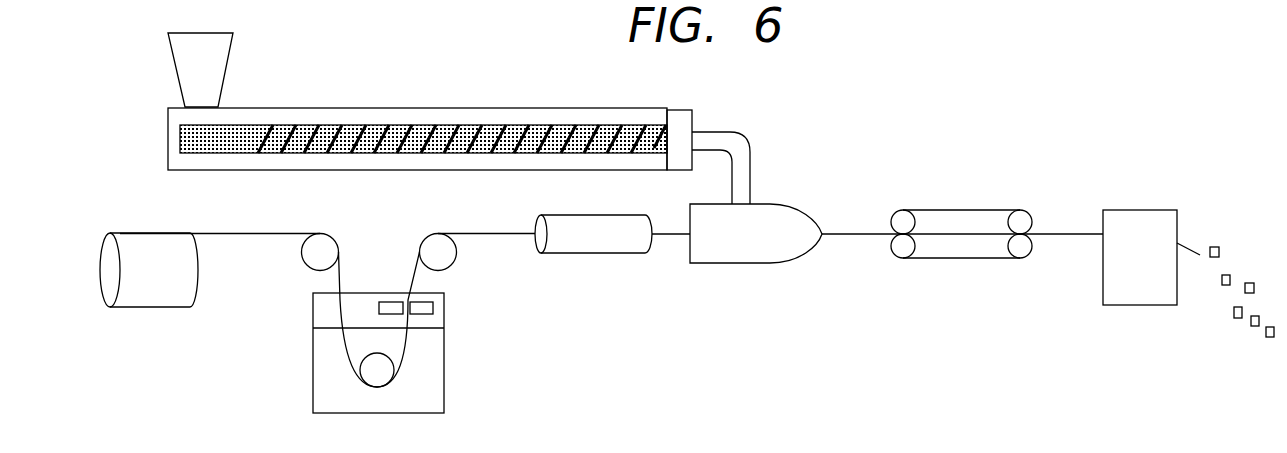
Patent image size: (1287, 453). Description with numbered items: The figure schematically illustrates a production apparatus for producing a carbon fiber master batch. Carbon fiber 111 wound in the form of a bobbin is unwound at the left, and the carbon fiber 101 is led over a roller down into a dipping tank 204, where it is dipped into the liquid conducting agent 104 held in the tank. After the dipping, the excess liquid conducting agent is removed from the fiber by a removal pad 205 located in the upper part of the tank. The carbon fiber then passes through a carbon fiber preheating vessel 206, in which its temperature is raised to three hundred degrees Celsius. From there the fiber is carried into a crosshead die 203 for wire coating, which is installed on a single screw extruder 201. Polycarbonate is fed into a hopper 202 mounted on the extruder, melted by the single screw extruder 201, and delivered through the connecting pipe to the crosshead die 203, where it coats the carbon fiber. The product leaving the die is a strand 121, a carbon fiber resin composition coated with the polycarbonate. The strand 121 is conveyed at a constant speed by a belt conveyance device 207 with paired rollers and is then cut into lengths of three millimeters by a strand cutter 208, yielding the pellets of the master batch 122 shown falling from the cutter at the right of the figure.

The single screw extruder 201 is at (368, 115).
The hopper 202 is at (185, 60).
The crosshead die 203 is at (801, 223).
The dipping tank 204 is at (313, 313).
The removal pad 205 is at (433, 308).
The carbon fiber preheating vessel 206 is at (600, 256).
The belt conveyance device 207 is at (977, 259).
The strand cutter 208 is at (1145, 210).
The carbon fiber 101 is at (243, 237).
The liquid conducting agent 104 is at (430, 392).
The carbon fiber 111 is at (140, 297).
The strand 121 is at (845, 237).
The master batch 122 is at (1251, 283).